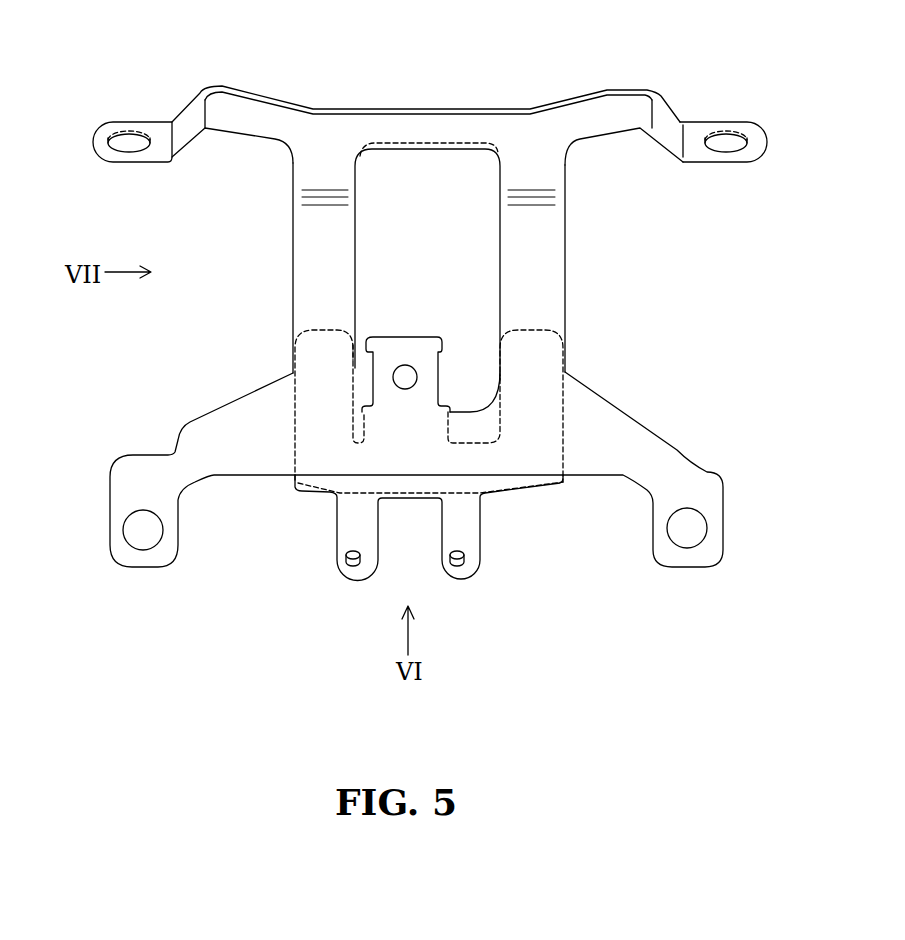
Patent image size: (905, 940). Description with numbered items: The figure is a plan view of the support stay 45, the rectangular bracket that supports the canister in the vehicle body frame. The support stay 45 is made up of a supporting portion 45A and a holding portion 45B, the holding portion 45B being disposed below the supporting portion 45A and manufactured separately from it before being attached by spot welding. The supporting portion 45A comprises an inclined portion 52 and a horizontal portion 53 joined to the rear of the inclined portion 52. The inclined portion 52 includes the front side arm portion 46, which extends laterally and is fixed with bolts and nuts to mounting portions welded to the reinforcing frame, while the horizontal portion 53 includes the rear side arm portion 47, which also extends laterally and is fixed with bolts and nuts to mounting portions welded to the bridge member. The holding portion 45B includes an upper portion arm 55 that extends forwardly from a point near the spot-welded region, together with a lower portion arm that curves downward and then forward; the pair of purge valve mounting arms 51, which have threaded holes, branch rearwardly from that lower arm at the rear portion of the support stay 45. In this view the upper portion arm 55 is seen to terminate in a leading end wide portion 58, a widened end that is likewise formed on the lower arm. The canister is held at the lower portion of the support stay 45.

The support stay 45 is at (523, 318).
The supporting portion 45A is at (501, 277).
The holding portion 45B is at (502, 411).
The front side arm portion 46 is at (181, 107).
The rear side arm portion 47 is at (178, 466).
The purge valve mounting arms 51 is at (437, 560).
The inclined portion 52 is at (434, 128).
The horizontal portion 53 is at (570, 239).
The upper portion arm 55 is at (377, 372).
The leading end wide portion 58 is at (373, 340).